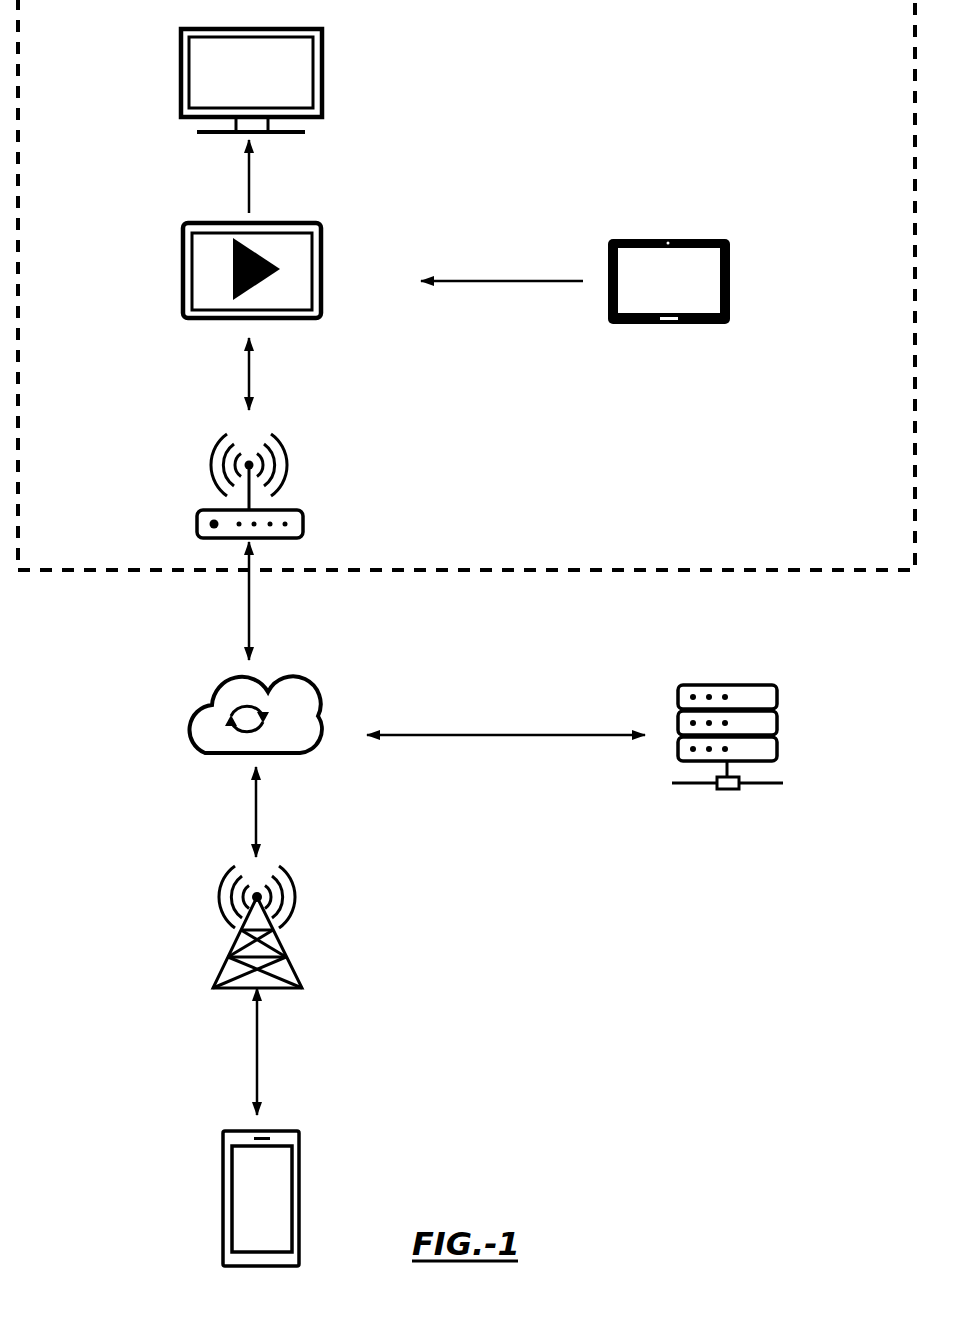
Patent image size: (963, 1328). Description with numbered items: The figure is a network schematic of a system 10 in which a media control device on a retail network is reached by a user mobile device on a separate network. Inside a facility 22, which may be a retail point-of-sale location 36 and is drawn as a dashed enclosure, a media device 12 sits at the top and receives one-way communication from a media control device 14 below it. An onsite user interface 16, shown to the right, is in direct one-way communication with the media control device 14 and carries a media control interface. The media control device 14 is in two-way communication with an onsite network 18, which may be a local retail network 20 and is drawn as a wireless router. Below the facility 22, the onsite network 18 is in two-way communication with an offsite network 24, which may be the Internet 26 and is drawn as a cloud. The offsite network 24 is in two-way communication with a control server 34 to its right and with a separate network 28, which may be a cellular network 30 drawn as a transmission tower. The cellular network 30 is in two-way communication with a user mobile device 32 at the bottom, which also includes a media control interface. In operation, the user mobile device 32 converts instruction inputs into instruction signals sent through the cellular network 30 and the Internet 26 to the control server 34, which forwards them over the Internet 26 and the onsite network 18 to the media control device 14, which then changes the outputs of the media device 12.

The system 10 is at (556, 1133).
The media device 12 is at (290, 64).
The media control device 14 is at (282, 252).
The onsite user interface 16 is at (729, 276).
The onsite network 18 is at (314, 486).
The local retail network 20 is at (298, 502).
The facility 22 is at (466, 285).
The offsite network 24 is at (318, 714).
The Internet 26 is at (295, 732).
The separate network 28 is at (173, 927).
The cellular network 30 is at (237, 962).
The user mobile device 32 is at (329, 1174).
The control server 34 is at (757, 685).
The retail point-of-sale location 36 is at (897, 561).